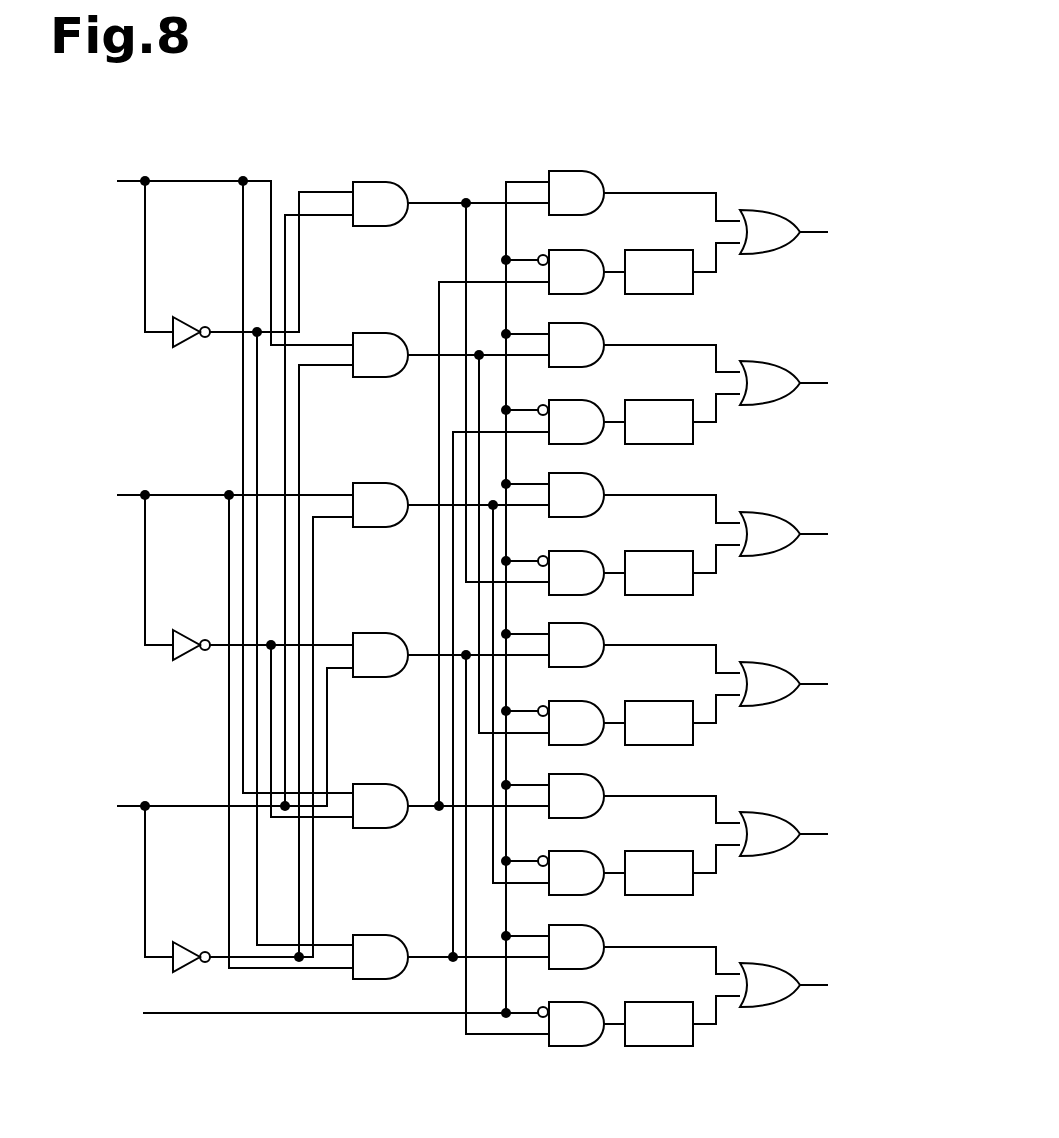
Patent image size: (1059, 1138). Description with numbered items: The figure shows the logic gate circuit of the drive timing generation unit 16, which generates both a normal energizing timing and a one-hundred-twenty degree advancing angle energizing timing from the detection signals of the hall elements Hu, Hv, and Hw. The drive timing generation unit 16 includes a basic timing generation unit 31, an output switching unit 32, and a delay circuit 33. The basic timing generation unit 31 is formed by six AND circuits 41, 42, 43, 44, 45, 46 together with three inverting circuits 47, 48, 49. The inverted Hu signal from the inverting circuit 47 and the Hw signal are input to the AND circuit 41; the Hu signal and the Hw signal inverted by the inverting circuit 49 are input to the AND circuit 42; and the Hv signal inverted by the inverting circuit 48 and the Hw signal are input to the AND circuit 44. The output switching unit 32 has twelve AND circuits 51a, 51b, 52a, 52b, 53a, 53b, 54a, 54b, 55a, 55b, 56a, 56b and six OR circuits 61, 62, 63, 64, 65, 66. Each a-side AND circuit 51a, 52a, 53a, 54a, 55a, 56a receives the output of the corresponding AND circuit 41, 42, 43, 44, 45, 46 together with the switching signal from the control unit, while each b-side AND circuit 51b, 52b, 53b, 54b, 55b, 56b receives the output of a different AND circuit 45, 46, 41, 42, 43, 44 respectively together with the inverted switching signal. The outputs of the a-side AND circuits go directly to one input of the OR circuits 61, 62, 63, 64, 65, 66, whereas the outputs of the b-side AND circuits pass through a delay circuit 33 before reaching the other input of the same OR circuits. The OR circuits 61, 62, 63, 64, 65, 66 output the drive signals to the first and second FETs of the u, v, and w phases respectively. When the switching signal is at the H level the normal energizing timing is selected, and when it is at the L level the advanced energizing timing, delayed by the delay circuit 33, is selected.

The drive timing generation unit 16 is at (816, 93).
The basic timing generation unit 31 is at (425, 132).
The output switching unit 32 is at (810, 132).
The delay circuit 33 is at (650, 251).
The AND circuit 41 is at (366, 182).
The AND circuit 42 is at (366, 333).
The AND circuit 43 is at (366, 483).
The AND circuit 44 is at (366, 633).
The AND circuit 45 is at (366, 784).
The AND circuit 46 is at (366, 935).
The inverting circuit 47 is at (187, 316).
The inverting circuit 48 is at (187, 629).
The inverting circuit 49 is at (187, 941).
The AND circuit 51a is at (556, 172).
The AND circuit 51b is at (556, 251).
The AND circuit 52a is at (556, 324).
The AND circuit 52b is at (556, 401).
The AND circuit 53a is at (556, 474).
The AND circuit 53b is at (556, 552).
The AND circuit 54a is at (556, 624).
The AND circuit 54b is at (556, 702).
The AND circuit 55a is at (556, 775).
The AND circuit 55b is at (556, 852).
The AND circuit 56a is at (556, 926).
The AND circuit 56b is at (556, 1003).
The OR circuit 61 is at (753, 211).
The OR circuit 62 is at (753, 362).
The OR circuit 63 is at (753, 513).
The OR circuit 64 is at (753, 663).
The OR circuit 65 is at (753, 813).
The OR circuit 66 is at (753, 964).